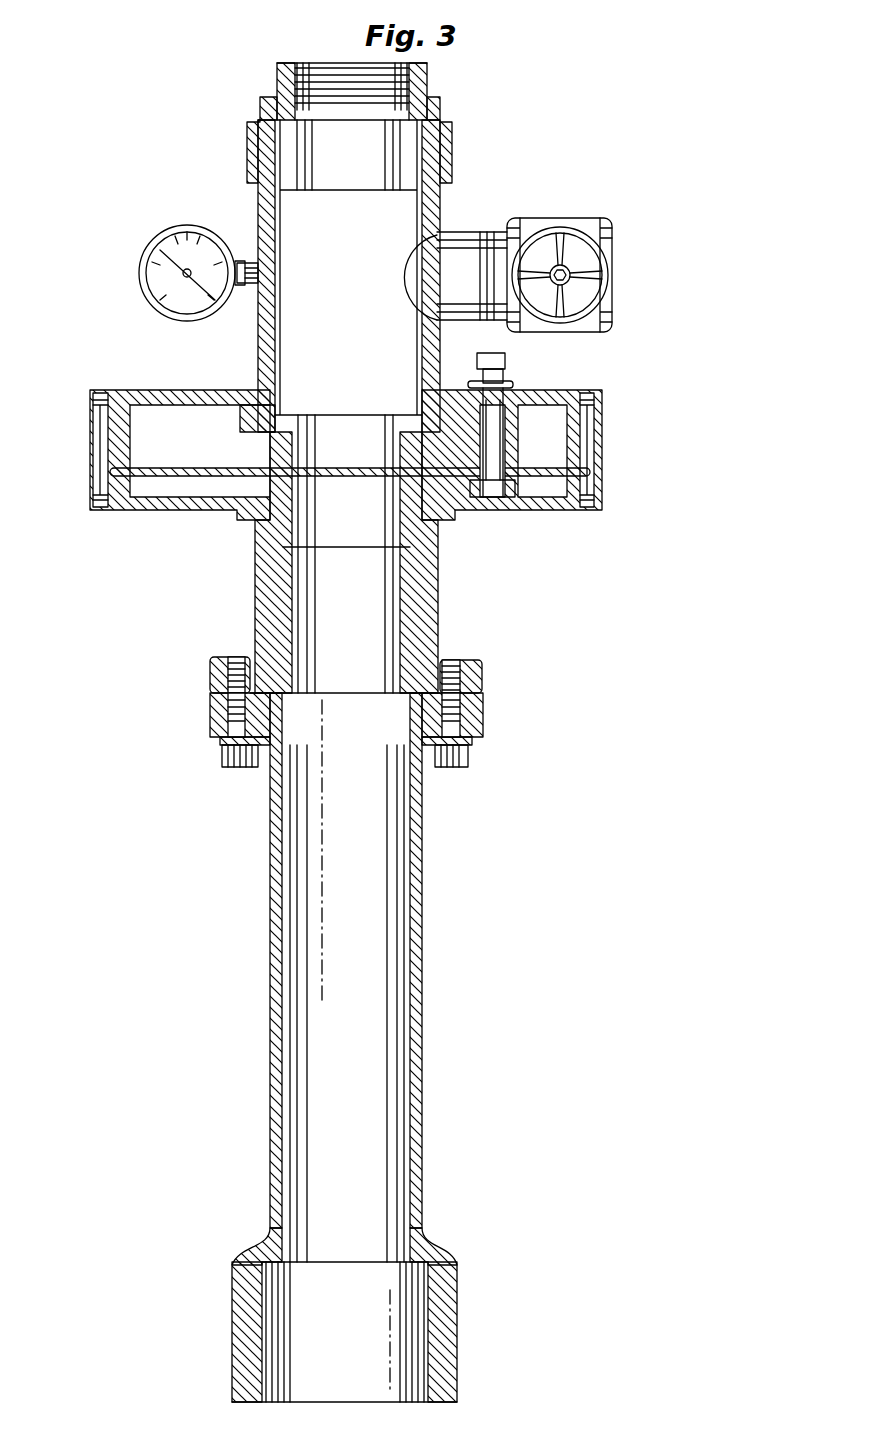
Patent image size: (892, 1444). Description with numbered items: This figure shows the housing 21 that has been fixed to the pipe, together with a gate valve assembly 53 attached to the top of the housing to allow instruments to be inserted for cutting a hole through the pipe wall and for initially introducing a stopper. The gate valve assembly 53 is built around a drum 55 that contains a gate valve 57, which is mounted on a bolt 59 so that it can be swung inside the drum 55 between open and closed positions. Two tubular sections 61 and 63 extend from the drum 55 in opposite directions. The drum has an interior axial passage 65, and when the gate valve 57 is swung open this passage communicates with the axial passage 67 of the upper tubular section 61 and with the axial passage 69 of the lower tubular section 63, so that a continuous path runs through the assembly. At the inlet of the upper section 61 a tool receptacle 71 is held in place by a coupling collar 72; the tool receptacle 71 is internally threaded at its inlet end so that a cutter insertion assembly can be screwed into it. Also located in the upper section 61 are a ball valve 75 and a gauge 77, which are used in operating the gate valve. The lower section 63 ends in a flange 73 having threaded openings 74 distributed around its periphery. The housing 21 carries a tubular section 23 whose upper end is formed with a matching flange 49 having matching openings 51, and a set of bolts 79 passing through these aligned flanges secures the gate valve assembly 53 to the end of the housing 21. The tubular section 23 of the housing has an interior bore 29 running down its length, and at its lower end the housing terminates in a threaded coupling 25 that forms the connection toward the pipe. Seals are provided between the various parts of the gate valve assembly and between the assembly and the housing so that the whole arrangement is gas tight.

The housing 21 is at (458, 1247).
The tubular section 23 is at (422, 1097).
The threaded coupling 25 is at (458, 1292).
The pipe bore 29 is at (410, 962).
The matching flange 49 is at (484, 735).
The matching openings 51 is at (405, 732).
The gate valve assembly 53 is at (602, 378).
The drum 55 is at (176, 385).
The gate valve 57 is at (320, 466).
The bolt 59 is at (492, 432).
The tubular section 61 is at (440, 200).
The tubular section 63 is at (440, 612).
The interior axial passage 65 is at (367, 533).
The axial passage 67 is at (362, 294).
The axial passage 69 is at (367, 627).
The tool receptacle 71 is at (430, 82).
The coupling collar 72 is at (452, 132).
The flange 73 is at (480, 665).
The threaded openings 74 is at (210, 666).
The ball valve 75 is at (566, 222).
The gauge 77 is at (162, 258).
The bolts 79 is at (230, 769).